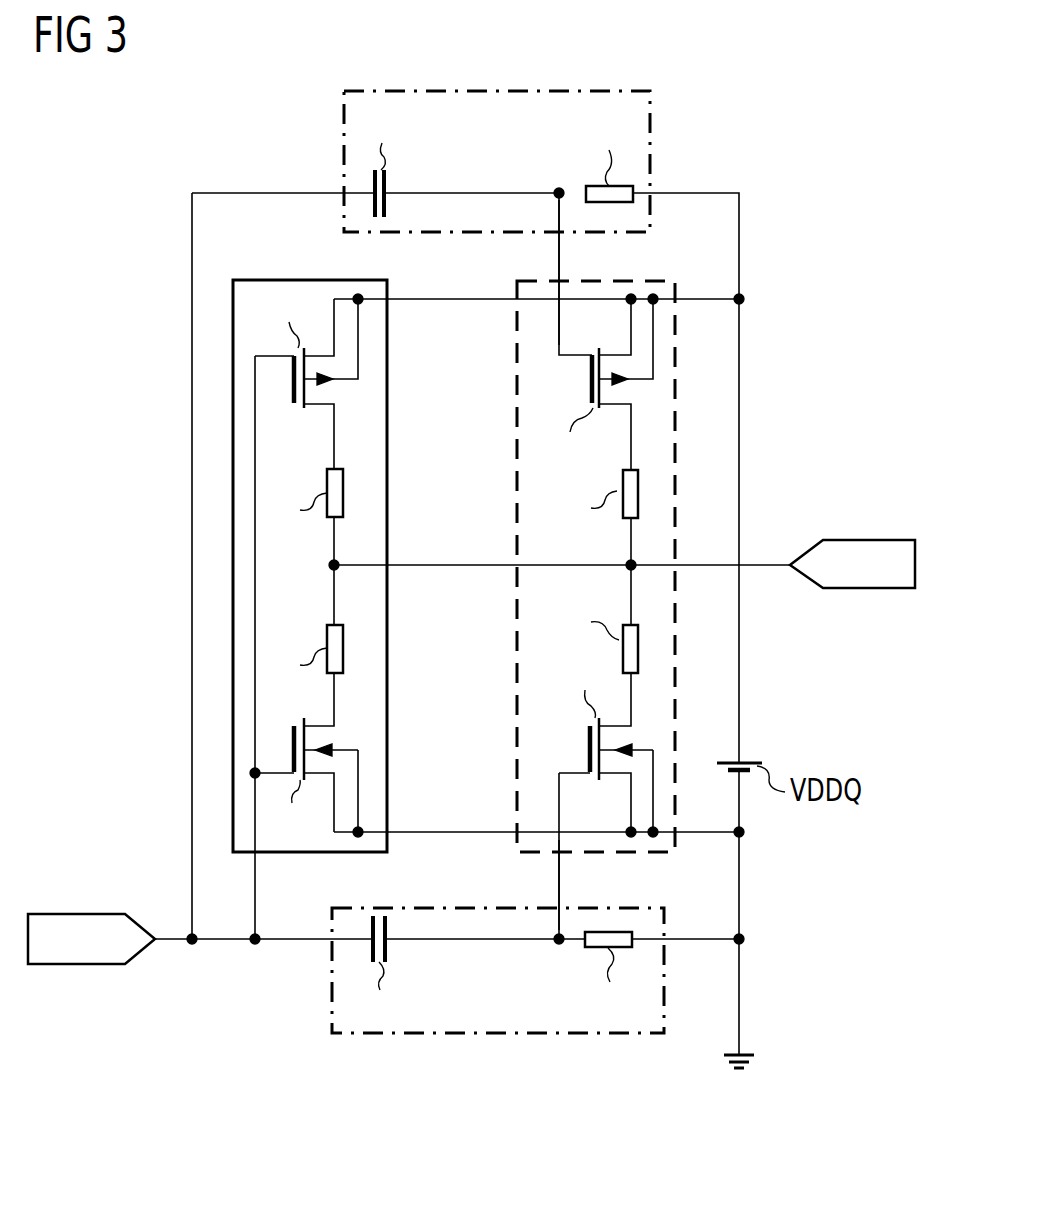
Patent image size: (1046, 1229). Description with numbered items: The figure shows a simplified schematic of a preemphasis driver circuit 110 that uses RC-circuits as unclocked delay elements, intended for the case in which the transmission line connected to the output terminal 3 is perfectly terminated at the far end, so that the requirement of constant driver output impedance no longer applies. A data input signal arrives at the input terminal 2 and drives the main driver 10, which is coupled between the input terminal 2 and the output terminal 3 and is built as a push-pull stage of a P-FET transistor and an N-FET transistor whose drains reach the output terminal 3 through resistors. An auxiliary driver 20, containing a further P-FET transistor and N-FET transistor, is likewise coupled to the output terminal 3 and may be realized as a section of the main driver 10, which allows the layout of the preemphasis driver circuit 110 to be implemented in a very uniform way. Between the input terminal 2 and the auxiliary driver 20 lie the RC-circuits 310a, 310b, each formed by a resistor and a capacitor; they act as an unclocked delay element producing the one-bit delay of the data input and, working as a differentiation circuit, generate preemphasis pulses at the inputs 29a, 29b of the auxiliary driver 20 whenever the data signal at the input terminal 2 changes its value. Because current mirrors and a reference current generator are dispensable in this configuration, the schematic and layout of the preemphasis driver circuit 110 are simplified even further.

The preemphasis driver circuit 110 is at (720, 108).
The RC-circuit 310a is at (488, 91).
The RC-circuit 310b is at (478, 1034).
The main driver 10 is at (280, 279).
The auxiliary driver 20 is at (675, 281).
The input to the auxiliary driver 29a is at (559, 258).
The input to the auxiliary driver 29b is at (559, 880).
The input terminal 2 is at (74, 913).
The output terminal 3 is at (865, 540).